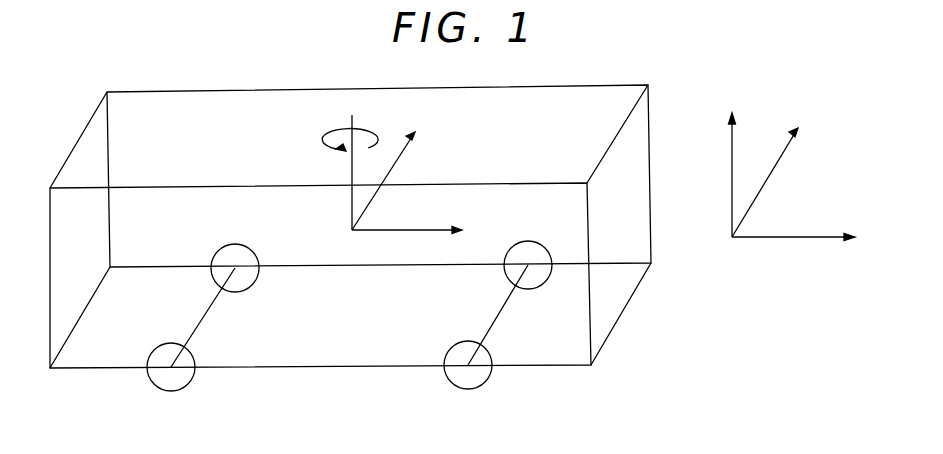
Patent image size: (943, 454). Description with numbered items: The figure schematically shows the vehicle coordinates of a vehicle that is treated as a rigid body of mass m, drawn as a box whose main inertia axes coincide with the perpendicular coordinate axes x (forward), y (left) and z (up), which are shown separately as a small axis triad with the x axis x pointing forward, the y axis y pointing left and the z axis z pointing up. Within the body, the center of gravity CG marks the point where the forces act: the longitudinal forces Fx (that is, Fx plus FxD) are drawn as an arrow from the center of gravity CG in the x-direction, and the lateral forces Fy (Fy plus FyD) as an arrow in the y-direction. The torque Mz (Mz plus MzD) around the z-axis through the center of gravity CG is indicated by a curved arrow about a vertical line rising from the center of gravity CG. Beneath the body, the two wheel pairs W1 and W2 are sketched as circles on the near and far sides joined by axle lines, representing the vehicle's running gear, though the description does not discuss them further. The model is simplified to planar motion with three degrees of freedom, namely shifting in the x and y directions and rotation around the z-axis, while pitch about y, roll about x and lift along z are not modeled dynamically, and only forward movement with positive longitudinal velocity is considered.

The center of gravity CG is at (350, 226).
The left wheel pair W1 is at (203, 317).
The right wheel pair W2 is at (498, 315).
The forces Fx+FxD in the x-direction Fx is at (408, 242).
The forces Fy+FyD in the y-direction Fy is at (438, 175).
The torque Mz+MzD around the z-axis Mz is at (283, 172).
The x coordinate axis x is at (793, 250).
The y coordinate axis y is at (770, 182).
The z coordinate axis z is at (719, 175).